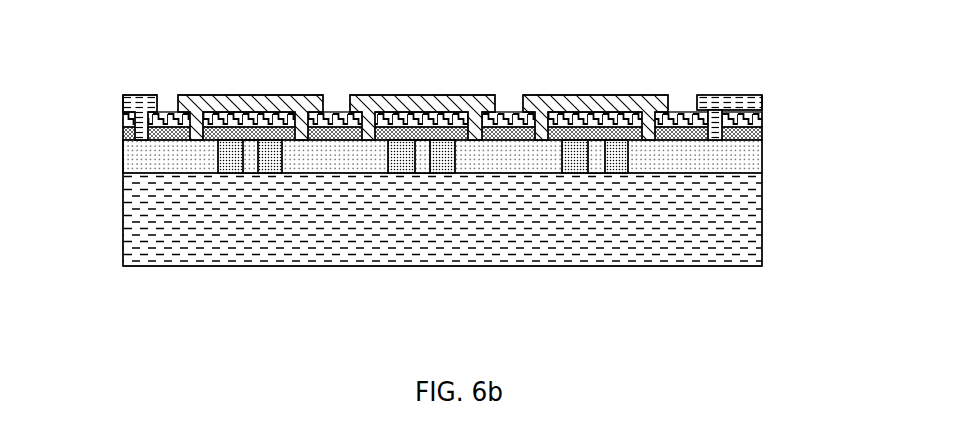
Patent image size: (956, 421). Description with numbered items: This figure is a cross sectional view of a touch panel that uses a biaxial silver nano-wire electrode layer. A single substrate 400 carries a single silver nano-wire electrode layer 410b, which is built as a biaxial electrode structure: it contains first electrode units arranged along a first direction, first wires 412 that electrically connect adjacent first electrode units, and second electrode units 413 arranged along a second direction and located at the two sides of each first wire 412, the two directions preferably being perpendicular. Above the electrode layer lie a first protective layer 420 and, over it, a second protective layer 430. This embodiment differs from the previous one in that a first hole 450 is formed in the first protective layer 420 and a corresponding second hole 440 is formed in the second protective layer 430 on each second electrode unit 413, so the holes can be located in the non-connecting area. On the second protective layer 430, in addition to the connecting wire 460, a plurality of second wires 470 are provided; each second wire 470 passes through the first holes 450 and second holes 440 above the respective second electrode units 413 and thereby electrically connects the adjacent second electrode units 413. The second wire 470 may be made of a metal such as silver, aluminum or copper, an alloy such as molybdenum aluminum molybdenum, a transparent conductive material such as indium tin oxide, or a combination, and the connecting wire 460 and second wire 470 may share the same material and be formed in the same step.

The substrate 400 is at (730, 230).
The silver nano-wire electrode layer 410b is at (718, 155).
The first wire 412 is at (250, 142).
The second electrode unit 413 is at (121, 152).
The first protective layer 420 is at (762, 133).
The second protective layer 430 is at (763, 110).
The second hole 440 is at (715, 124).
The first hole 450 is at (707, 120).
The connecting wire 460 is at (148, 96).
The second wire 470 is at (307, 95).